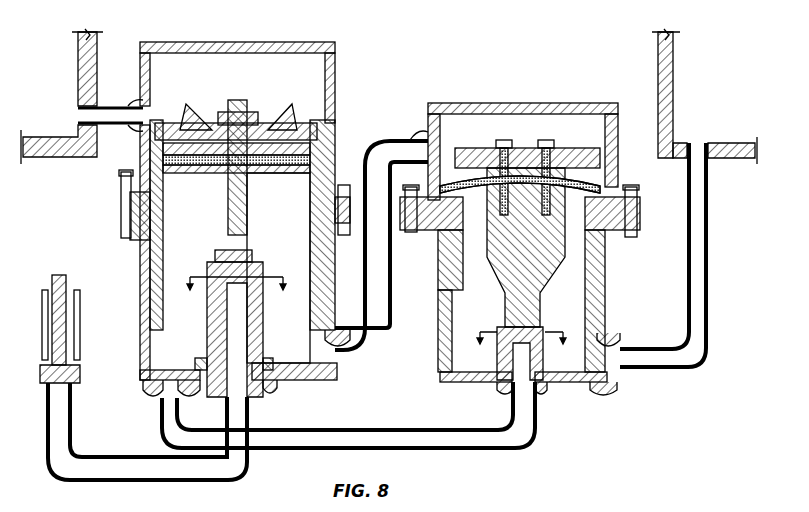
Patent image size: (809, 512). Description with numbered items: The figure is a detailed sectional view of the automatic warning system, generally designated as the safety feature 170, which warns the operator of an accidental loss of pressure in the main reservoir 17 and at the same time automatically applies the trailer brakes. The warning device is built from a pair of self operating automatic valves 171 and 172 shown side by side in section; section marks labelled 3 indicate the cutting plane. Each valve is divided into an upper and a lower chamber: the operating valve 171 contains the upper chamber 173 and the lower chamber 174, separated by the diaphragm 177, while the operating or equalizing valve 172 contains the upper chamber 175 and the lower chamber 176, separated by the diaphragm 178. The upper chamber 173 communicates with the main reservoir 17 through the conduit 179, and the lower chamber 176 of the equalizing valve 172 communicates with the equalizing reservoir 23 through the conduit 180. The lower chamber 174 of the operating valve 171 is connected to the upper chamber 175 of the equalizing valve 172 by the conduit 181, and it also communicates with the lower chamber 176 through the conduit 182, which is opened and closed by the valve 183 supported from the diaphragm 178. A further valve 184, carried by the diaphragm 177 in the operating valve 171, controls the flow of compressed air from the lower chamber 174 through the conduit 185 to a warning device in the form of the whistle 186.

The main reservoir 17 is at (63, 111).
The equalizing reservoir 23 is at (726, 98).
The safety feature 170 is at (367, 111).
The self operating automatic valve 171 is at (286, 42).
The self operating automatic valve 172 is at (546, 103).
The upper chamber 173 is at (284, 85).
The lower chamber 174 is at (291, 218).
The upper chamber 175 is at (534, 137).
The lower chamber 176 is at (578, 312).
The diaphragm 177 is at (212, 175).
The diaphragm 178 is at (582, 170).
The conduit 179 is at (110, 104).
The conduit 180 is at (708, 276).
The conduit 181 is at (390, 279).
The conduit 182 is at (425, 428).
The valve 183 is at (508, 342).
The valve 184 is at (225, 254).
The conduit 185 is at (72, 421).
The whistle 186 is at (78, 250).
The section line 3 is at (377, 321).